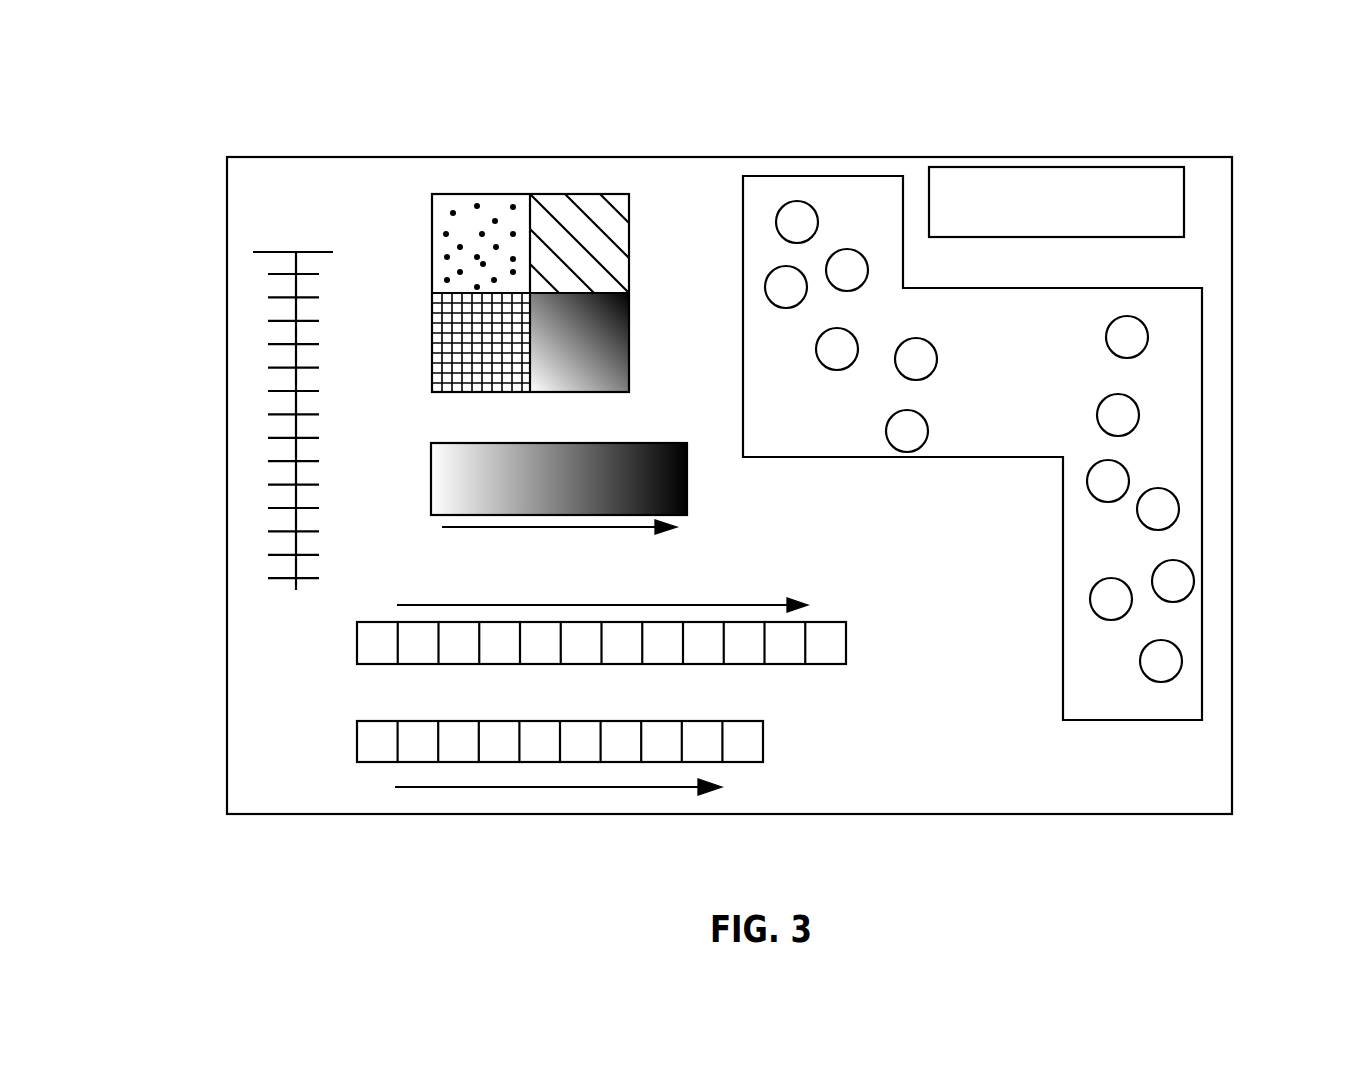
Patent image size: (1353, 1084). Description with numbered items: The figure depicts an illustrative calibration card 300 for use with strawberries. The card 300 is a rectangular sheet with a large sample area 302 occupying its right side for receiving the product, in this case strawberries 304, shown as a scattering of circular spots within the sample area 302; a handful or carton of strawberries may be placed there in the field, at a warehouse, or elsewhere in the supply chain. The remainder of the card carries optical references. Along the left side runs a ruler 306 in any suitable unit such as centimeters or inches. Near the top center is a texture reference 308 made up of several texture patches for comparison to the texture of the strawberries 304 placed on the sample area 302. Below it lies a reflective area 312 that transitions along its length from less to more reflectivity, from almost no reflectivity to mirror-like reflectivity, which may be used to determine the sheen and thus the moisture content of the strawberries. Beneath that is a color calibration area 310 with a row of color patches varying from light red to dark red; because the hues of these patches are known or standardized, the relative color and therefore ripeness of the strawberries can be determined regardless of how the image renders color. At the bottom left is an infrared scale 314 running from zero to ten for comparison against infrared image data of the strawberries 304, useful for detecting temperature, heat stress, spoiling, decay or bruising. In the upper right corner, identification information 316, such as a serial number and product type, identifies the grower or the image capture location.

The calibration card 300 is at (162, 100).
The sample area 302 is at (1203, 378).
The strawberries 304 is at (847, 249).
The ruler 306 is at (296, 378).
The texture reference 308 is at (630, 242).
The color calibration area 310 is at (357, 637).
The reflective area 312 is at (431, 448).
The infrared scale 314 is at (368, 762).
The identification information 316 is at (1185, 195).